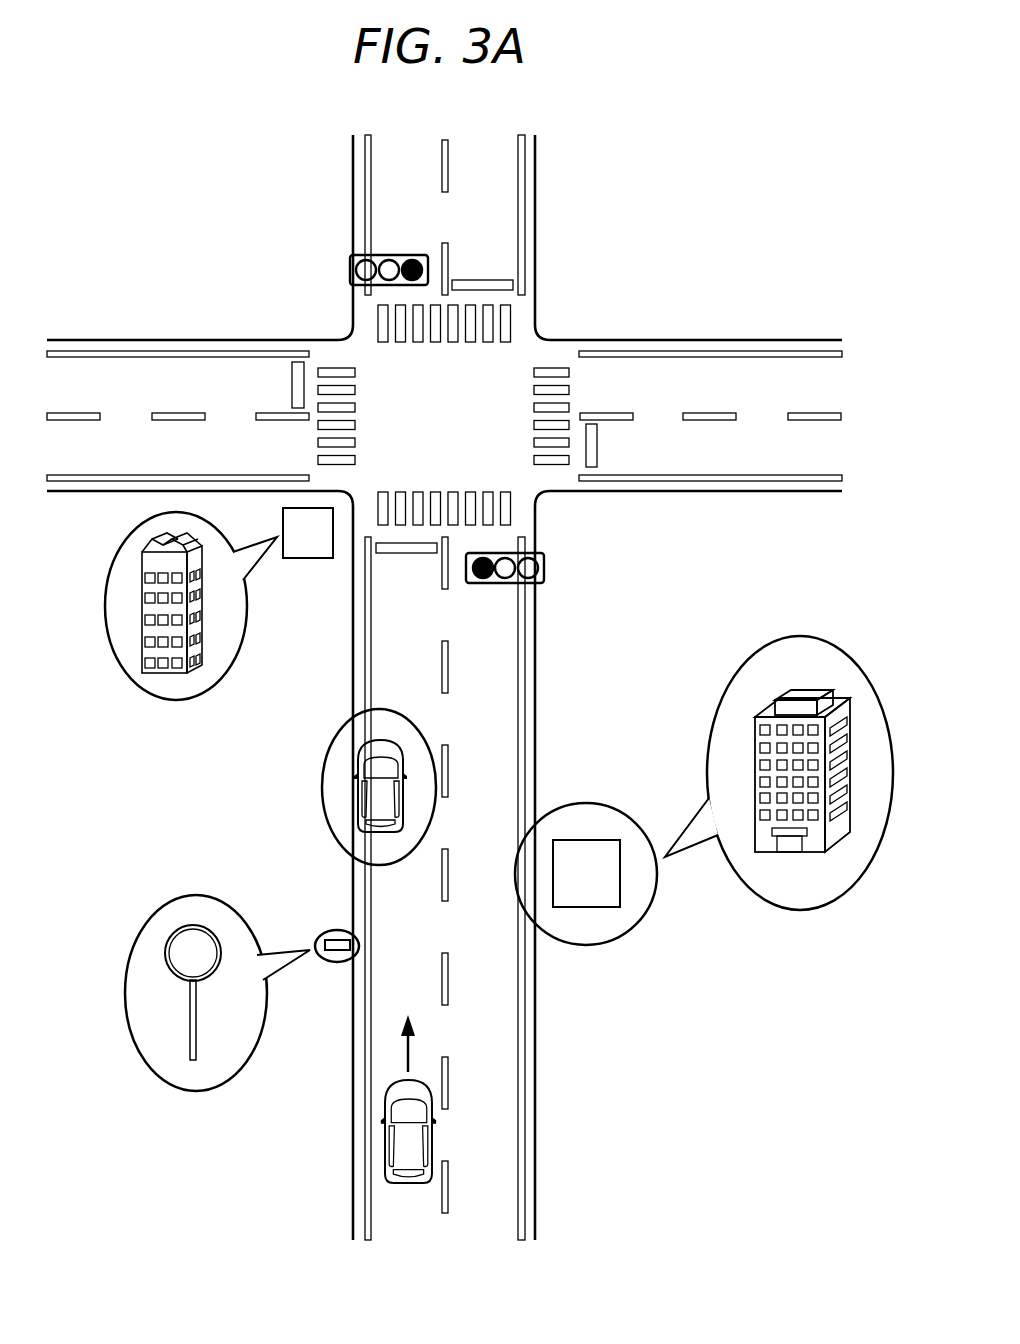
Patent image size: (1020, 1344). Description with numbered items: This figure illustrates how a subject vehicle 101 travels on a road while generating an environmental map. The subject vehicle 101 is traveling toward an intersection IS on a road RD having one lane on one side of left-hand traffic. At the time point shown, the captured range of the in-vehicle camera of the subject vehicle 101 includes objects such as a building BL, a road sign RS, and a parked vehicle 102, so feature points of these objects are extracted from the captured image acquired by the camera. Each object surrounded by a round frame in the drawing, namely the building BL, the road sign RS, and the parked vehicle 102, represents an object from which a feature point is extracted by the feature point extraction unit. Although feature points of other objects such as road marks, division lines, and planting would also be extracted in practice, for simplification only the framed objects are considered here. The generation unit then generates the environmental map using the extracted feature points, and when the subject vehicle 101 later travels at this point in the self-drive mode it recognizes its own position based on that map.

The intersection IS is at (500, 373).
The building BL is at (586, 840).
The road sign RS is at (336, 940).
The road RD is at (493, 1188).
The subject vehicle 101 is at (388, 1105).
The parked vehicle 102 is at (359, 790).